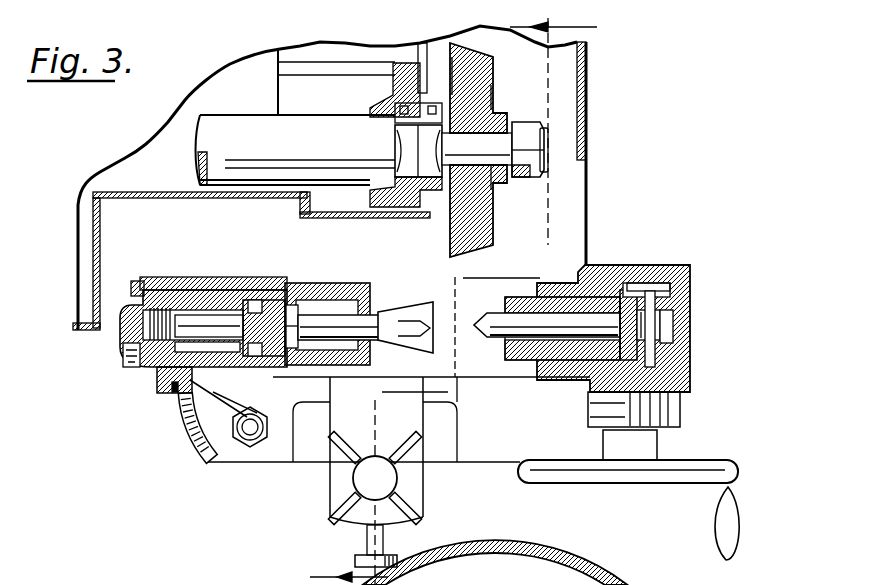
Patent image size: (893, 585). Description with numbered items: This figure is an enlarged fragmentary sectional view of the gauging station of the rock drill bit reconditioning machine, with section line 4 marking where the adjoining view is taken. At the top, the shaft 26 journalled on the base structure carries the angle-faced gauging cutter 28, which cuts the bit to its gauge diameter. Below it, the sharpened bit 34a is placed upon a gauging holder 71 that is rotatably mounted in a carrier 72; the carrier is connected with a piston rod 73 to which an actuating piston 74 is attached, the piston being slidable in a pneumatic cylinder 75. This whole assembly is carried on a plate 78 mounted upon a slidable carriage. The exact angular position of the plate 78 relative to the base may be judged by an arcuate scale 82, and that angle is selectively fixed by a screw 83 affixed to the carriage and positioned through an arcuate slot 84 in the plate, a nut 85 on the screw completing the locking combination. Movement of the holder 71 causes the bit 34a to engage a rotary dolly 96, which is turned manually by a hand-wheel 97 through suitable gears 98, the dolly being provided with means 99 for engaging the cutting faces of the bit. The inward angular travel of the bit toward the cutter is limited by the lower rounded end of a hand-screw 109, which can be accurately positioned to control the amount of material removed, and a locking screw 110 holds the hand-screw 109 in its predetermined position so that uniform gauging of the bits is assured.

The section line 4- 4 is at (461, 301).
The shaft 26 is at (296, 150).
The angle-faced gauging cutter 28 is at (518, 69).
The bit 34a is at (397, 310).
The gauging holder 71 is at (342, 322).
The carrier 72 is at (287, 313).
The piston rod 73 is at (213, 323).
The actuating piston 74 is at (122, 348).
The pneumatic cylinder 75 is at (193, 310).
The plate 78 is at (283, 462).
The arcuate scale 82 is at (197, 425).
The screw 83 is at (242, 437).
The arcuate slot 84 is at (212, 392).
The nut 85 is at (252, 427).
The rotary dolly 96 is at (507, 350).
The hand-wheel 97 is at (655, 485).
The gears 98 is at (632, 297).
The means for engaging the cutting faces 99 is at (493, 316).
The hand-screw 109 is at (400, 473).
The locking screw 110 is at (358, 553).